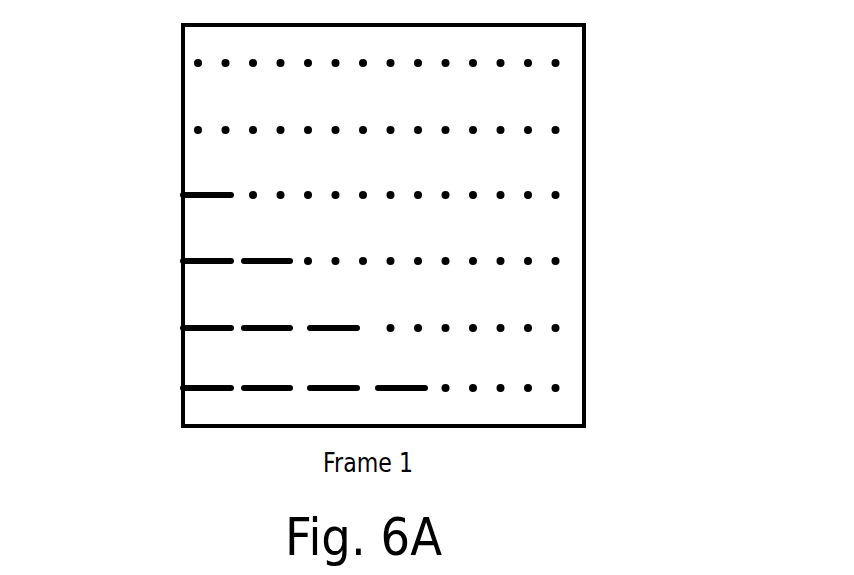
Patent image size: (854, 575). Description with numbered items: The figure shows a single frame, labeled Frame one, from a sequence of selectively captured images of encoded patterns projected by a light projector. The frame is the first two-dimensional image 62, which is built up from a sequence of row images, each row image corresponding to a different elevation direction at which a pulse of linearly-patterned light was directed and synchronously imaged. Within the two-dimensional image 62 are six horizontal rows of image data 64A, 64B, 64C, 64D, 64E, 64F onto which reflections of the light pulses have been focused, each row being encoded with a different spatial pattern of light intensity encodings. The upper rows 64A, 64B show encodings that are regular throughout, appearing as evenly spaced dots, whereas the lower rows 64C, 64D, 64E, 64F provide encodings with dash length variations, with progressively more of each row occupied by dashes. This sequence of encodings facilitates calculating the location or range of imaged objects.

The first two-dimensional image 62 is at (648, 130).
The row of image data 64A is at (166, 63).
The row of image data 64B is at (166, 130).
The row of image data 64C is at (166, 195).
The row of image data 64D is at (166, 261).
The row of image data 64E is at (166, 328).
The row of image data 64F is at (166, 388).